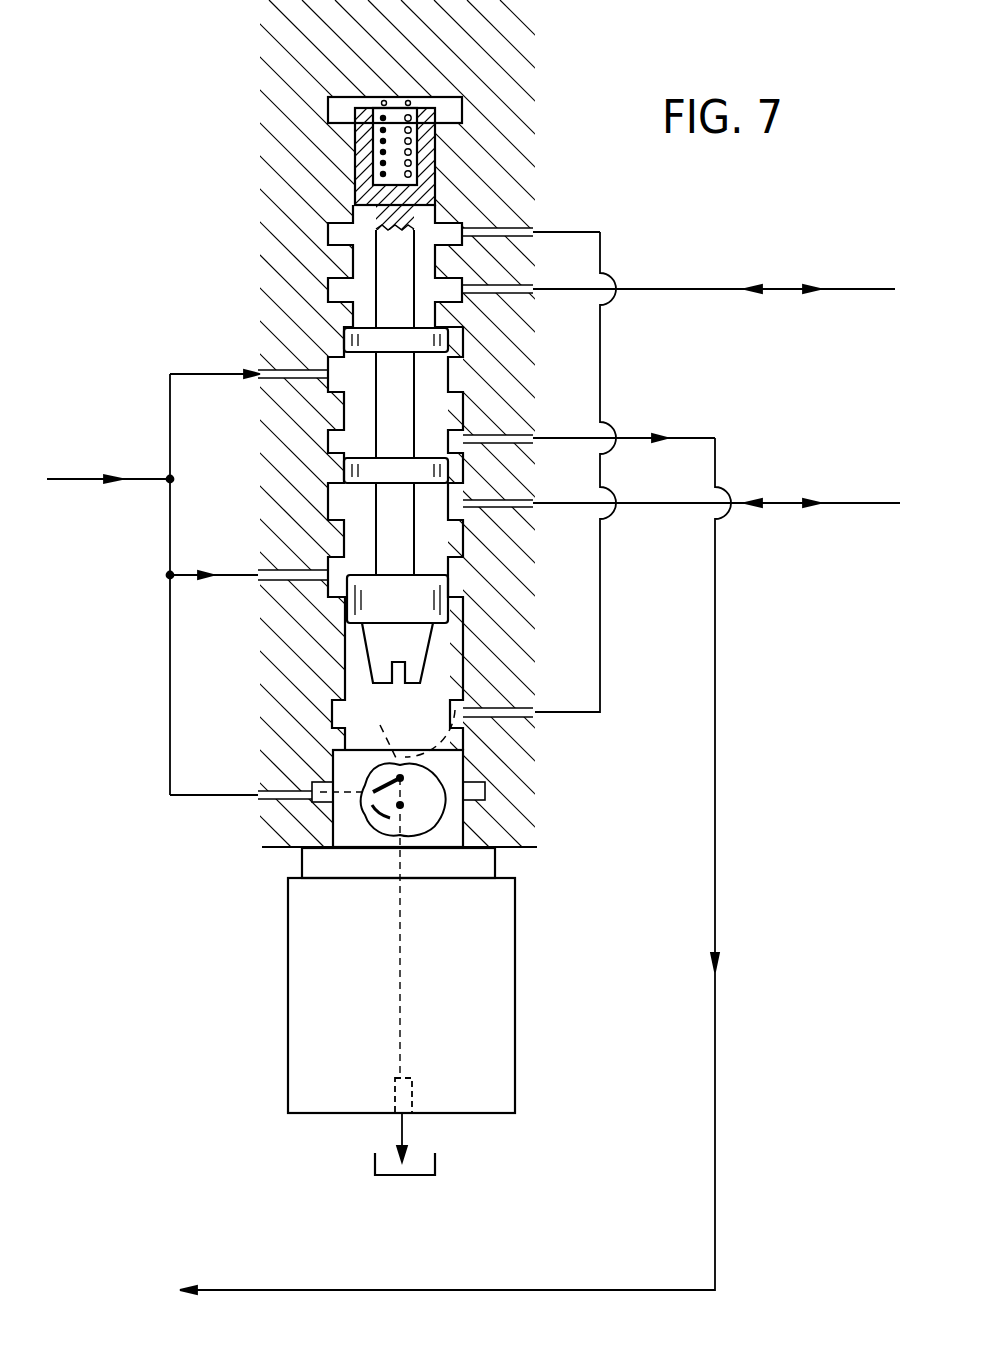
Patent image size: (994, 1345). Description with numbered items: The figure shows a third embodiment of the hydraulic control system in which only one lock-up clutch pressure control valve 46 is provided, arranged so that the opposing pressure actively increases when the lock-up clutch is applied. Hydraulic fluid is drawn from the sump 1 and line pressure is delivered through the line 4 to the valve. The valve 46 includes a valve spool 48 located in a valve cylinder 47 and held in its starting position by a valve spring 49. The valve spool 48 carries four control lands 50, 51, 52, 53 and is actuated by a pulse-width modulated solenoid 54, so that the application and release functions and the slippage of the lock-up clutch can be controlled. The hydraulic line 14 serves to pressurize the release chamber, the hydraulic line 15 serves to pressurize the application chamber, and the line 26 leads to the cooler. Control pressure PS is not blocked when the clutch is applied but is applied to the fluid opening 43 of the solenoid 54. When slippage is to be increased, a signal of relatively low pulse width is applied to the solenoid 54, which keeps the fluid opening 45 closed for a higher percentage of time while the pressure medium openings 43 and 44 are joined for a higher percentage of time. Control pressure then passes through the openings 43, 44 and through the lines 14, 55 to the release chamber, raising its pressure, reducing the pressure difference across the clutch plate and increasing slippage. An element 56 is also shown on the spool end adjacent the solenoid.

The sump 1 is at (435, 1161).
The line pressure line 4 is at (75, 474).
The hydraulic line 14 is at (866, 290).
The hydraulic line 15 is at (867, 504).
The cooler line 26 is at (715, 662).
The fluid opening 43 is at (322, 782).
The pressure medium opening 44 is at (410, 728).
The fluid opening 45 is at (398, 1093).
The lock-up clutch pressure control valve 46 is at (205, 691).
The valve cylinder 47 is at (440, 402).
The valve spool 48 is at (383, 407).
The valve spring 49 is at (397, 117).
The control land 50 is at (367, 191).
The control land 51 is at (340, 330).
The control land 52 is at (344, 466).
The control land 53 is at (347, 618).
The pulse-width modulated solenoid 54 is at (500, 1068).
The line 55 is at (567, 231).
The valve lifter 56 is at (384, 657).